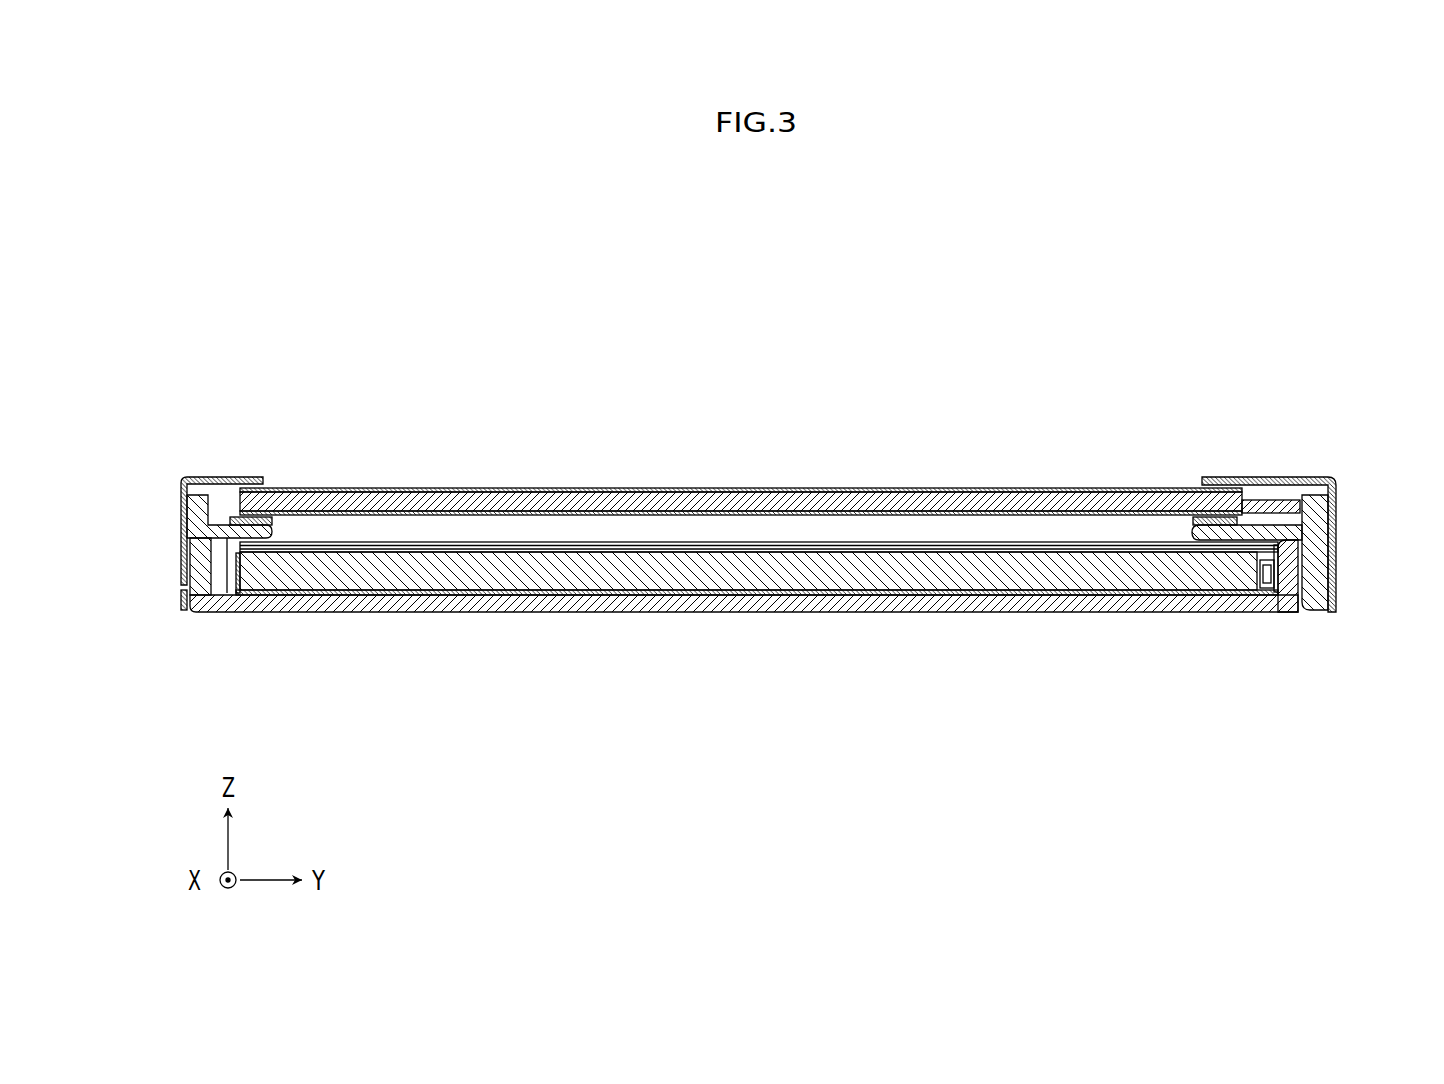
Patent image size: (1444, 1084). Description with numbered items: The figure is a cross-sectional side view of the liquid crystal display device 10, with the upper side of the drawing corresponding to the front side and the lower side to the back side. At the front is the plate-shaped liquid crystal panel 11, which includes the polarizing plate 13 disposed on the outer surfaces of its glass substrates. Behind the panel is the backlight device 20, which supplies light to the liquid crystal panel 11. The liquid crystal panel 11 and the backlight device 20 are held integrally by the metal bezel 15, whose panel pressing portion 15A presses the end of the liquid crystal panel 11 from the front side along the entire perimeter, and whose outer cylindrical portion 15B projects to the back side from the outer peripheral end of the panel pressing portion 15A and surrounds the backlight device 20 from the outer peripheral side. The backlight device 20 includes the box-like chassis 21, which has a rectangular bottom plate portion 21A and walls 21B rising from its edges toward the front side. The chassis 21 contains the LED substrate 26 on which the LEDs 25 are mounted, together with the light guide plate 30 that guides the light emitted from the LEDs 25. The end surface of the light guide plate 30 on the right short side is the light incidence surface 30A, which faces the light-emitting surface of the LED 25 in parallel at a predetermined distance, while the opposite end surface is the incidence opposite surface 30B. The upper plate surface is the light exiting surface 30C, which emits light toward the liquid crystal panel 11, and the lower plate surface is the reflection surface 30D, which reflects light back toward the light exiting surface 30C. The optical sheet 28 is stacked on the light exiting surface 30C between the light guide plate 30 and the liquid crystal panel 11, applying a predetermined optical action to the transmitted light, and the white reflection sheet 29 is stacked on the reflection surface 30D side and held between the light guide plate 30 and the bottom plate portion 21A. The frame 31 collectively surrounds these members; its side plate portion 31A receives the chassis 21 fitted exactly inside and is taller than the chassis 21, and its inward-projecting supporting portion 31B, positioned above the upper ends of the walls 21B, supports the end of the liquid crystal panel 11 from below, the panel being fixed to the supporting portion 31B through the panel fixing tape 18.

The liquid crystal display device 10 is at (952, 333).
The liquid crystal panel 11 is at (1013, 486).
The polarizing plate 13 is at (872, 515).
The bezel 15 is at (113, 413).
The panel pressing portion 15A is at (225, 477).
The outer cylindrical portion 15B is at (188, 502).
The panel fixing tape 18 is at (231, 517).
The backlight device 20 is at (591, 642).
The chassis 21 is at (335, 683).
The bottom plate portion 21A is at (312, 608).
The wall 21B is at (198, 573).
The LED 25 is at (1261, 576).
The LED substrate 26 is at (1274, 590).
The optical sheet 28 is at (505, 547).
The reflection sheet 29 is at (438, 594).
The light guide plate 30 is at (905, 580).
The light incidence surface 30A is at (1258, 555).
The incidence opposite surface 30B is at (248, 572).
The light exiting surface 30C is at (648, 553).
The reflection surface 30D is at (793, 590).
The frame 31 is at (1383, 438).
The side plate portion 31A is at (1318, 552).
The supporting portion 31B is at (1283, 525).